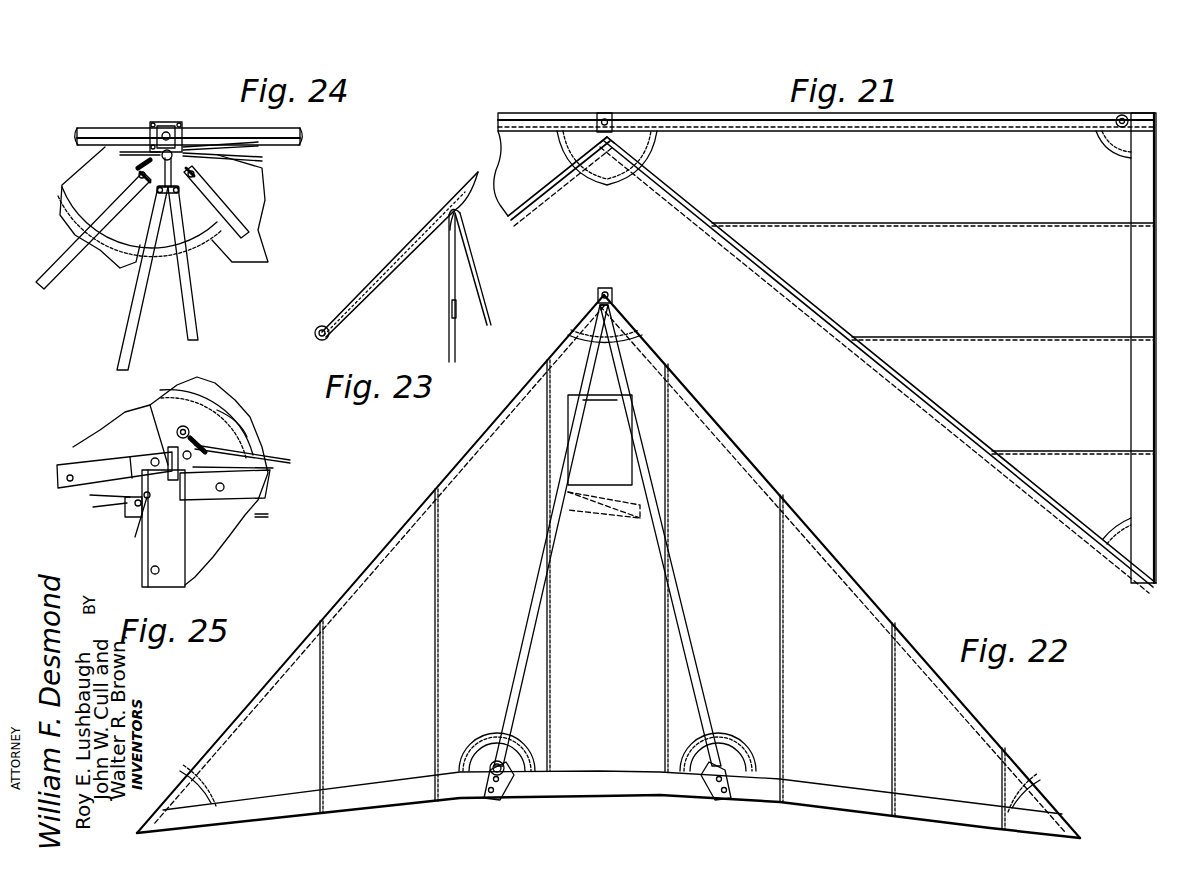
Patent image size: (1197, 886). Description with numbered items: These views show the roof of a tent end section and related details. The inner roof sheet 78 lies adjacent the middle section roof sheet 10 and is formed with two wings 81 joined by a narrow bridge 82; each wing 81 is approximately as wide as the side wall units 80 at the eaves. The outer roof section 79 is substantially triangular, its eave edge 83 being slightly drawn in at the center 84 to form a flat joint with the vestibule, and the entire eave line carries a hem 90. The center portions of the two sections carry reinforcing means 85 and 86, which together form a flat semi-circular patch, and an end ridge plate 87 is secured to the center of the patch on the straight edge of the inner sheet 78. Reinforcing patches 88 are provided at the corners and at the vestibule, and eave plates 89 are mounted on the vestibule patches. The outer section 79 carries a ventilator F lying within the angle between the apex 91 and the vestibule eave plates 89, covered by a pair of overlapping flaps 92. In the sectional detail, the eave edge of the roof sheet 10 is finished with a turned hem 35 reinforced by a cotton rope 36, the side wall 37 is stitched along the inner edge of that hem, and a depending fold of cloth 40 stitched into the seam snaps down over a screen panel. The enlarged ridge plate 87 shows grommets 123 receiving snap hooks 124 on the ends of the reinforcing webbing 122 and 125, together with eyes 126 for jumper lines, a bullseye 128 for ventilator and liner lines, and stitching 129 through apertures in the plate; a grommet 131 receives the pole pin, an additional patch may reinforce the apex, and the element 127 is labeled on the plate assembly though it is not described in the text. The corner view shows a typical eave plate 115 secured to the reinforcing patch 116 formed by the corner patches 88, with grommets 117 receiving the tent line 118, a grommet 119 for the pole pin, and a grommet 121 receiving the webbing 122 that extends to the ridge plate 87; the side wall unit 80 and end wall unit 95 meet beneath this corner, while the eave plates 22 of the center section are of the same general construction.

In FIG. 23, the roof sheet 10 is at (458, 192).
In FIG. 21, the eave plate 22 is at (1122, 114).
In FIG. 23, the eave hem 35 is at (375, 290).
In FIG. 23, the cotton rope 36 is at (328, 340).
In FIG. 23, the side wall 37 is at (456, 350).
In FIG. 23, the depending fold of cloth 40 is at (485, 295).
In FIG. 21, the inner roof sheet 78 is at (833, 322).
In FIG. 24, the inner roof sheet 78 is at (262, 243).
In FIG. 25, the inner roof sheet 78 is at (200, 395).
In FIG. 22, the outer roof section 79 is at (738, 440).
In FIG. 24, the outer roof section 79 is at (110, 258).
In FIG. 25, the outer roof section 79 is at (230, 445).
In FIG. 25, the side wall unit 80 is at (120, 438).
In FIG. 21, the wing 81 is at (540, 205).
In FIG. 21, the bridge 82 is at (607, 145).
In FIG. 22, the eave edge 83 is at (372, 808).
In FIG. 22, the center of eave edge 84 is at (570, 798).
In FIG. 21, the reinforcing means 85 is at (645, 150).
In FIG. 22, the reinforcing means 86 is at (620, 330).
In FIG. 24, the reinforcing means 86 is at (140, 238).
In FIG. 21, the end ridge plate 87 is at (606, 112).
In FIG. 24, the end ridge plate 87 is at (176, 121).
In FIG. 21, the reinforcing patch 88 is at (1120, 537).
In FIG. 22, the reinforcing patch 88 is at (510, 758).
In FIG. 22, the eave plate 89 is at (475, 745).
In FIG. 22, the hem 90 is at (842, 798).
In FIG. 22, the apex 91 is at (613, 303).
In FIG. 22, the overlapping flaps 92 is at (620, 520).
In FIG. 25, the end wall unit 95 is at (205, 545).
In FIG. 25, the eave plate 115 is at (230, 468).
In FIG. 25, the reinforcing patch 116 is at (210, 405).
In FIG. 25, the grommet 117 is at (130, 515).
In FIG. 25, the tent line 118 is at (95, 510).
In FIG. 25, the grommet 119 is at (188, 462).
In FIG. 25, the grommet 121 is at (220, 420).
In FIG. 24, the reinforcing webbing 122 is at (235, 220).
In FIG. 25, the reinforcing webbing 122 is at (215, 430).
In FIG. 24, the grommet 123 is at (230, 150).
In FIG. 24, the snap hook 124 is at (240, 162).
In FIG. 22, the reinforcing webbing 125 is at (530, 612).
In FIG. 24, the reinforcing webbing 125 is at (132, 310).
In FIG. 24, the eye 126 is at (132, 152).
In FIG. 24, the cross bar 127 is at (240, 140).
In FIG. 24, the bullseye 128 is at (135, 168).
In FIG. 25, the bullseye 128 is at (180, 428).
In FIG. 24, the stitching 129 is at (165, 122).
In FIG. 22, the grommet 131 is at (505, 768).
In FIG. 24, the grommet 131 is at (150, 140).
In FIG. 22, the ventilator F is at (615, 463).